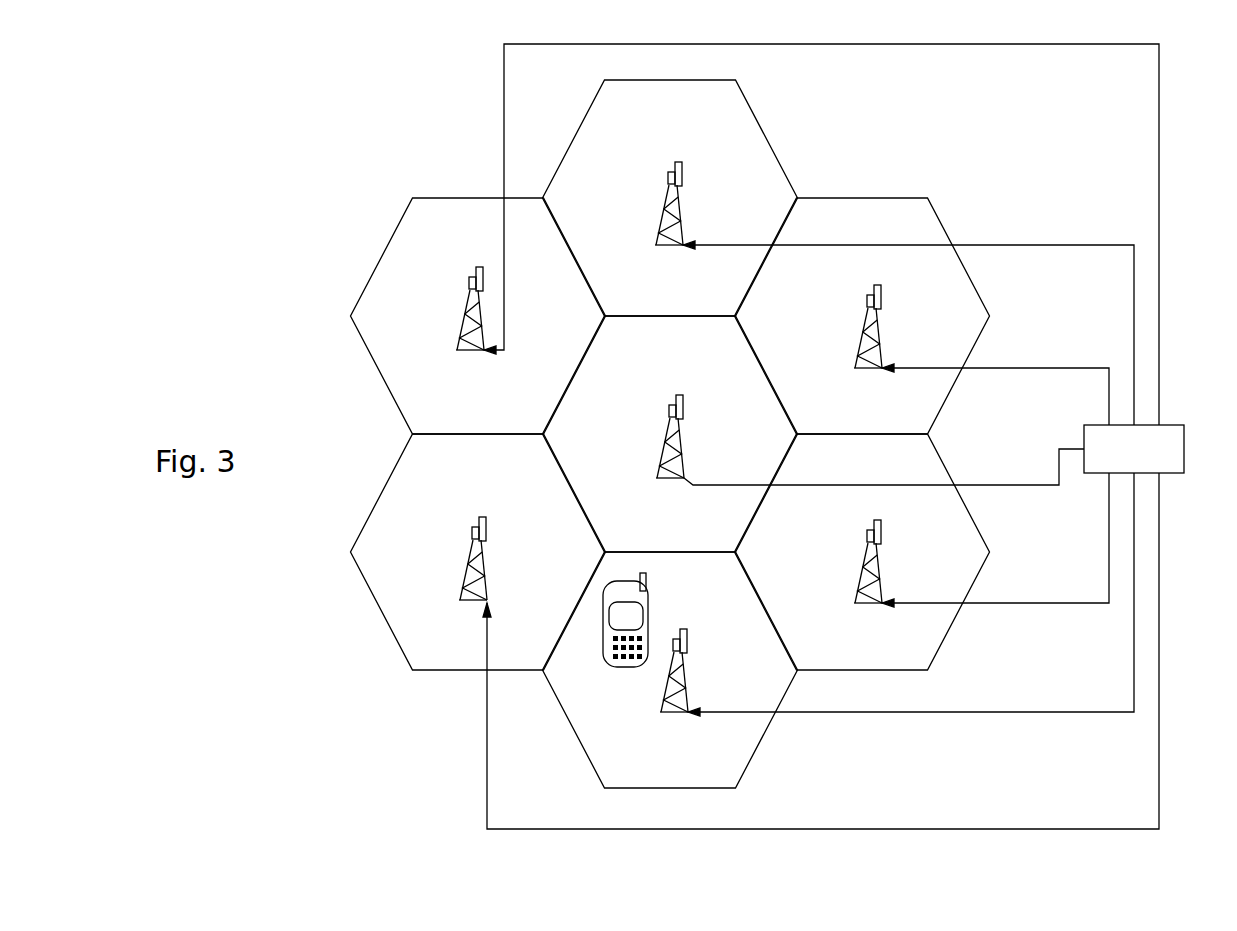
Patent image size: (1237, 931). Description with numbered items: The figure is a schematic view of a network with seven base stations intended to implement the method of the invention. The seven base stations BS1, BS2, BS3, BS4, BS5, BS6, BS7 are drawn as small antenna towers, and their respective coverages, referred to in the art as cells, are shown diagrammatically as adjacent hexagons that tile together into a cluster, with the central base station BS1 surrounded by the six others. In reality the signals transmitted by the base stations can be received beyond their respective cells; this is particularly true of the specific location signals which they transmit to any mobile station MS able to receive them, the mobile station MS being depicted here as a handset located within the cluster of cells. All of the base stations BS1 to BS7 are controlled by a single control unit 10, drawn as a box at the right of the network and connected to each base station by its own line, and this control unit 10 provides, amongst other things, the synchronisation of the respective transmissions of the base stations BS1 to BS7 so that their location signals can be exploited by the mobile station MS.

The control unit 10 is at (1184, 461).
The base station BS1 is at (870, 458).
The base station BS2 is at (894, 293).
The base station BS3 is at (981, 355).
The base station BS4 is at (981, 560).
The base station BS5 is at (897, 614).
The base station BS6 is at (809, 651).
The base station BS7 is at (807, 234).
The mobile station MS is at (625, 620).